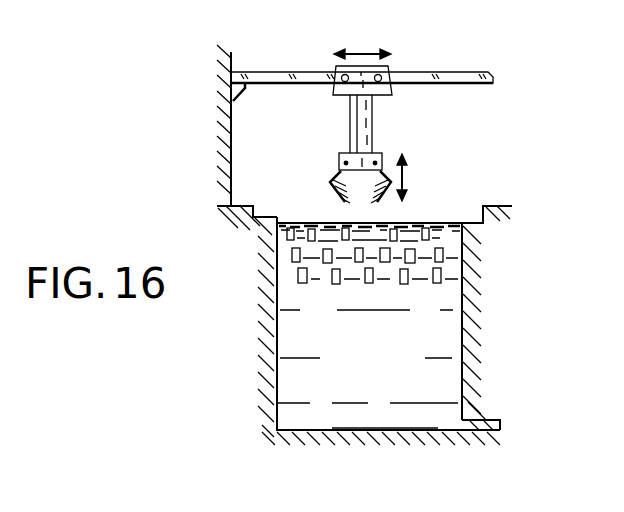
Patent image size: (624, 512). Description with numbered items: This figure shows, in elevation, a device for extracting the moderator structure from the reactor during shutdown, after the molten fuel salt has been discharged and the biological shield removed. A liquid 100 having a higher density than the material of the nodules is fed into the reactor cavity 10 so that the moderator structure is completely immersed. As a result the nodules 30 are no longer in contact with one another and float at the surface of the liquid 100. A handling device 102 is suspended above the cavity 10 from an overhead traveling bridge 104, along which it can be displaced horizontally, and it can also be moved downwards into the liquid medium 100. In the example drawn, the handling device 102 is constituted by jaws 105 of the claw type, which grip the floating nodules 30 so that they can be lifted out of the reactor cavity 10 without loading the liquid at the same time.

The reactor cavity 10 is at (276, 391).
The nodules 30 is at (295, 277).
The liquid 100 is at (388, 361).
The handling device 102 is at (337, 140).
The overhead traveling bridge 104 is at (417, 73).
The jaws 105 is at (377, 203).